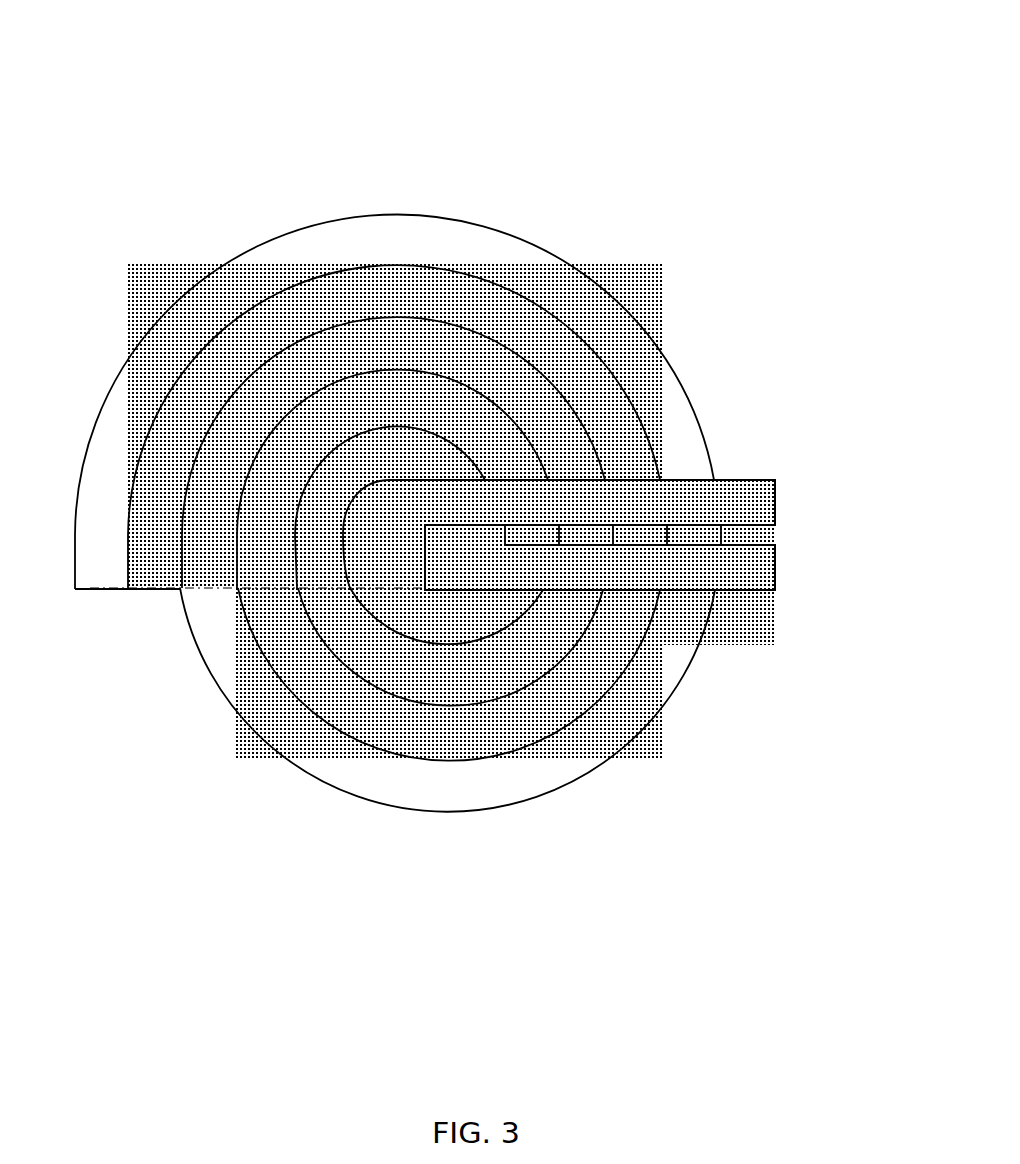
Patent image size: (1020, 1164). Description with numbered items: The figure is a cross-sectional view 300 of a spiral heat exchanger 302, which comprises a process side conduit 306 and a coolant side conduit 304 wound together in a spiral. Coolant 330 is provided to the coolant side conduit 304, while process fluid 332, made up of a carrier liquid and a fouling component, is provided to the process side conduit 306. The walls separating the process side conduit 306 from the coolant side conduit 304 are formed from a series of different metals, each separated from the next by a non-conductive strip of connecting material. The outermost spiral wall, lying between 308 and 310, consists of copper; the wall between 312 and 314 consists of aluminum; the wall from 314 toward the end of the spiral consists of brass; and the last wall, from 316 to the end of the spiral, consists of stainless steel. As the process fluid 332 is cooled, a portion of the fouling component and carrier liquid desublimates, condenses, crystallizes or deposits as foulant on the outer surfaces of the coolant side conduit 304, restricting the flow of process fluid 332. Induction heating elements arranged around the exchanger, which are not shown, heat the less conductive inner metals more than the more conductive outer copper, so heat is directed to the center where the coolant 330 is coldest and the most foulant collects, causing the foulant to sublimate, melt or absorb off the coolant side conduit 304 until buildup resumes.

The cross-sectional view of a spiral heat exchanger 300 is at (181, 67).
The spiral heat exchanger 302 is at (345, 214).
The coolant side conduit 304 is at (741, 480).
The process side conduit 306 is at (750, 590).
The start of outermost spiral wall 308 is at (102, 585).
The end of outermost spiral wall 310 is at (234, 592).
The start of aluminum wall section 312 is at (158, 574).
The boundary between aluminum and brass wall sections 314 is at (298, 588).
The start of stainless steel wall section 316 is at (356, 590).
The coolant 330 is at (812, 505).
The process fluid 332 is at (806, 568).